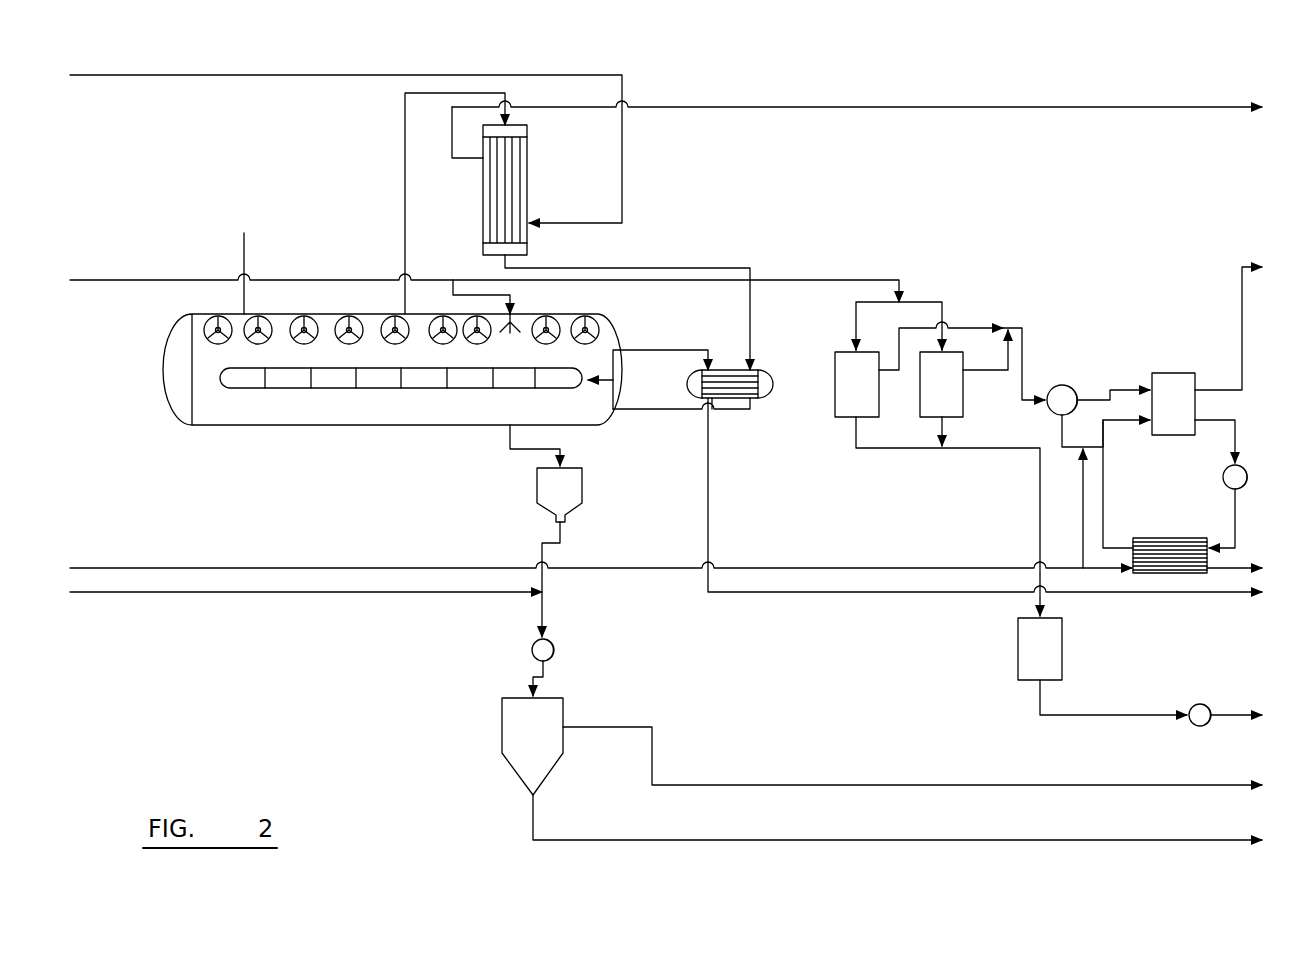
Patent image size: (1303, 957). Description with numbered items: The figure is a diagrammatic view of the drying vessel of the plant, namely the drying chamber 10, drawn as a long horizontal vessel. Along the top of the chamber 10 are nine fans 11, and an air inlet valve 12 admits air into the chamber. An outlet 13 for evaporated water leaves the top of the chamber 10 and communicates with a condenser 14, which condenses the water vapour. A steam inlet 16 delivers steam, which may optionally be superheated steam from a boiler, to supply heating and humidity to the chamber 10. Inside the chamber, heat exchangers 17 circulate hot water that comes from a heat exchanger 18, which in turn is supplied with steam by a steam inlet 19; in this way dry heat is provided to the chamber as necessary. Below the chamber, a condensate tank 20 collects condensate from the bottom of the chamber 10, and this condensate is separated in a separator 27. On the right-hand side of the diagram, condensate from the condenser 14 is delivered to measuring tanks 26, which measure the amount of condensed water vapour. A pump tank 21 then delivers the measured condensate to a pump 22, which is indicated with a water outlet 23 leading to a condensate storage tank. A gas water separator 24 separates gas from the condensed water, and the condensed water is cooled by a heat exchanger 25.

The drying chamber 10 is at (380, 425).
The fans 11 is at (368, 314).
The air inlet valve 12 is at (243, 258).
The outlet 13 is at (405, 137).
The condenser 14 is at (527, 148).
The steam inlet 16 is at (660, 410).
The heat exchangers 17 is at (330, 388).
The heat exchanger 18 is at (770, 392).
The steam inlet 19 is at (283, 314).
The condensate tank 20 is at (570, 480).
The pump tank 21 is at (1035, 650).
The pump 22 is at (1200, 703).
The water outlet 23 is at (1240, 712).
The gas water separator 24 is at (1167, 390).
The heat exchanger 25 is at (1165, 555).
The measuring tanks 26 is at (938, 408).
The separator 27 is at (520, 737).